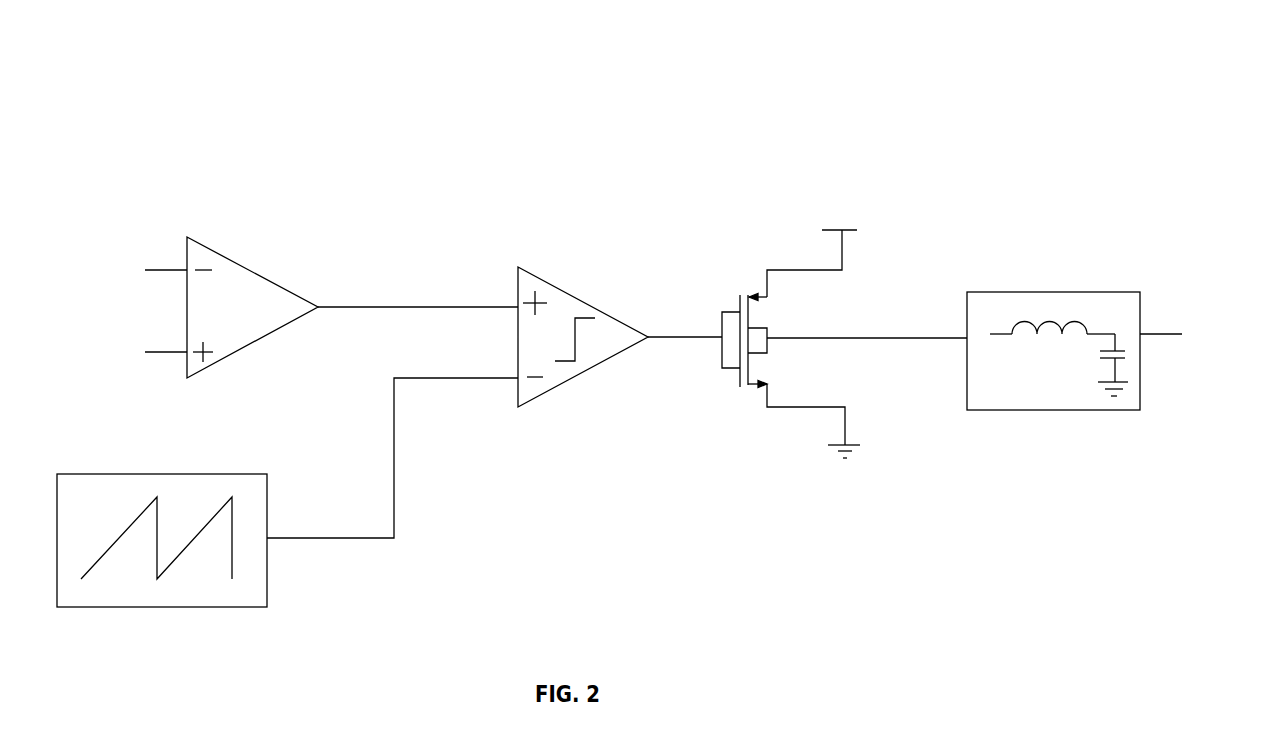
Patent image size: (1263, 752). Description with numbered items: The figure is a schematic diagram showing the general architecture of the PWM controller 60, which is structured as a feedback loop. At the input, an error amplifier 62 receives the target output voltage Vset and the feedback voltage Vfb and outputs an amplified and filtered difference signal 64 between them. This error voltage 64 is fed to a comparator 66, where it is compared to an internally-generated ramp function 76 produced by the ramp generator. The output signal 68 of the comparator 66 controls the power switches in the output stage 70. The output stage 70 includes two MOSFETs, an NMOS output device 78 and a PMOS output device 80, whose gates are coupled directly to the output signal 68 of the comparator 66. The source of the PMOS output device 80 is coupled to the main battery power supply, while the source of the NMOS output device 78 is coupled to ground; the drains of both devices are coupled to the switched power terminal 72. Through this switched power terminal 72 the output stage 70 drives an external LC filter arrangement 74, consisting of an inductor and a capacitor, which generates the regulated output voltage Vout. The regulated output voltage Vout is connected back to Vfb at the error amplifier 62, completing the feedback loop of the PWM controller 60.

The PWM controller 60 is at (125, 78).
The error amplifier 62 is at (247, 269).
The difference signal 64 is at (440, 307).
The comparator 66 is at (610, 316).
The output signal of the comparator 68 is at (672, 337).
The output stage 70 is at (775, 313).
The switched power terminal 72 is at (914, 338).
The LC filter arrangement 74 is at (1060, 410).
The ramp function 76 is at (200, 607).
The NMOS output device 78 is at (742, 388).
The PMOS output device 80 is at (730, 298).